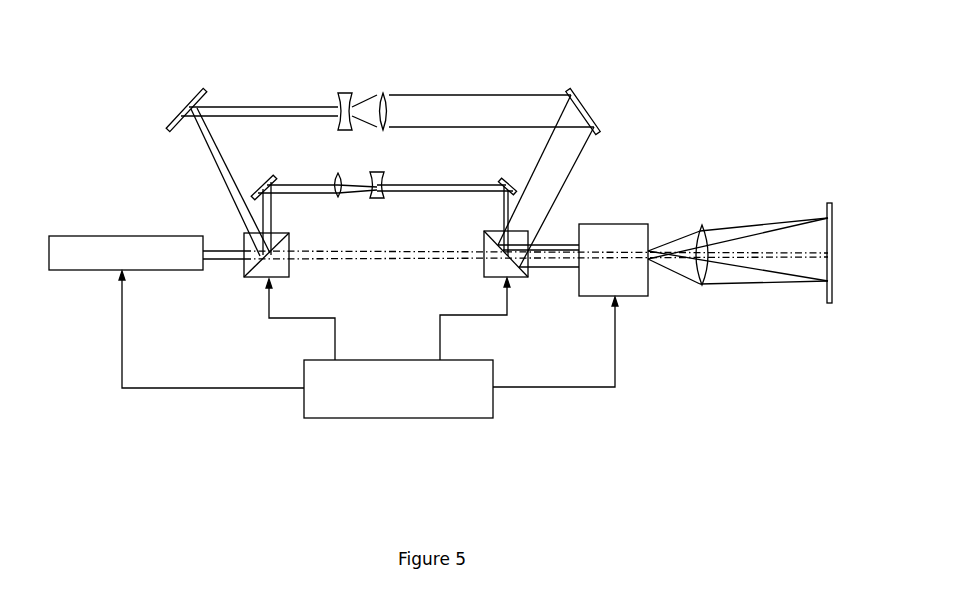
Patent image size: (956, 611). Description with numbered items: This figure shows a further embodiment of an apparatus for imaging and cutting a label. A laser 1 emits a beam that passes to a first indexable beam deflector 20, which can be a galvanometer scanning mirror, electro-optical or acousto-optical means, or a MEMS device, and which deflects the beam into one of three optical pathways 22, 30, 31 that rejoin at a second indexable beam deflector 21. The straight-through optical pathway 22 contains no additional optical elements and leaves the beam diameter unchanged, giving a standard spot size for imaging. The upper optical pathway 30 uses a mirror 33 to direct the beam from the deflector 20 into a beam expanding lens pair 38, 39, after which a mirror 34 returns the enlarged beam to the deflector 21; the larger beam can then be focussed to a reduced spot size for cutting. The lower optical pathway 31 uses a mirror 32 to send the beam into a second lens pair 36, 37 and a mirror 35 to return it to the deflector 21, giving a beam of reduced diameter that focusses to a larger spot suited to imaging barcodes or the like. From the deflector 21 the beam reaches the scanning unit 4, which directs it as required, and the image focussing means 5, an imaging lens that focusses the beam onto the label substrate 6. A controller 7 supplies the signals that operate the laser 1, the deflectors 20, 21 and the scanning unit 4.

The laser 1 is at (118, 235).
The scanning unit 4 is at (608, 222).
The image focussing means 5 is at (700, 224).
The label substrate 6 is at (826, 208).
The controller 7 is at (404, 420).
The indexable beam deflector 20 is at (292, 272).
The indexable beam deflector 21 is at (482, 270).
The optical pathway 22 is at (376, 263).
The optical pathway 30 is at (460, 93).
The optical pathway 31 is at (442, 192).
The mirror 32 is at (260, 178).
The mirror 33 is at (176, 104).
The mirror 34 is at (598, 110).
The mirror 35 is at (498, 178).
The beam expanding lens 36 is at (334, 172).
The beam expanding lens 37 is at (384, 172).
The beam expanding lens 38 is at (344, 92).
The beam expanding lens 39 is at (382, 92).